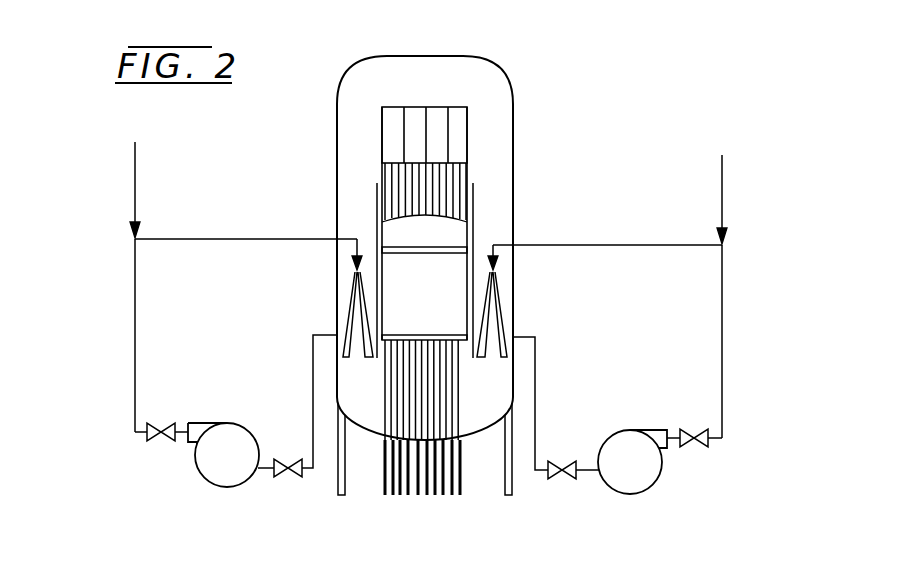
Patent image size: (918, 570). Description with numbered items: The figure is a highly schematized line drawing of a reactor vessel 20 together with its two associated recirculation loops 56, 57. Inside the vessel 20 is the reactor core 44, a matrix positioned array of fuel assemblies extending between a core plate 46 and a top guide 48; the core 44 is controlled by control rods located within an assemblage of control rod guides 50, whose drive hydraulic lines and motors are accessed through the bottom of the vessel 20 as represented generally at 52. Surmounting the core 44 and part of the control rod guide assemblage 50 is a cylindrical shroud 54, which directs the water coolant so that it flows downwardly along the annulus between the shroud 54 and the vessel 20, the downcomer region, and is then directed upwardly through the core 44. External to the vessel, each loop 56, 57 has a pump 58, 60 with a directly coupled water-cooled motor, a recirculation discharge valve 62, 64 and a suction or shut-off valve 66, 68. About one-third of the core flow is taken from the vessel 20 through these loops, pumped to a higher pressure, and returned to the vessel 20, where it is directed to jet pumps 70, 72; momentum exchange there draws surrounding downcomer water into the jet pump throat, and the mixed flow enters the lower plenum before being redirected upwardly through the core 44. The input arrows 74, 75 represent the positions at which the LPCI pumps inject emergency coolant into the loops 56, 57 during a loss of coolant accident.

The reactor vessel 20 is at (514, 149).
The reactor core 44 is at (443, 302).
The core plate 46 is at (468, 332).
The top guide 48 is at (455, 246).
The control rod guides 50 is at (455, 405).
The control rod drive hydraulic lines and motors 52 is at (375, 493).
The cylindrical shroud 54 is at (375, 200).
The recirculation loop 56 is at (792, 298).
The recirculation loop 57 is at (115, 333).
The pump 58 is at (634, 430).
The pump 60 is at (234, 423).
The recirculation discharge valve 62 is at (700, 432).
The recirculation discharge valve 64 is at (168, 425).
The suction or shut-off valve 66 is at (571, 480).
The suction or shut-off valve 68 is at (294, 478).
The jet pump 70 is at (497, 295).
The jet pump 72 is at (352, 302).
The input arrow 74 is at (724, 183).
The input arrow 75 is at (135, 175).